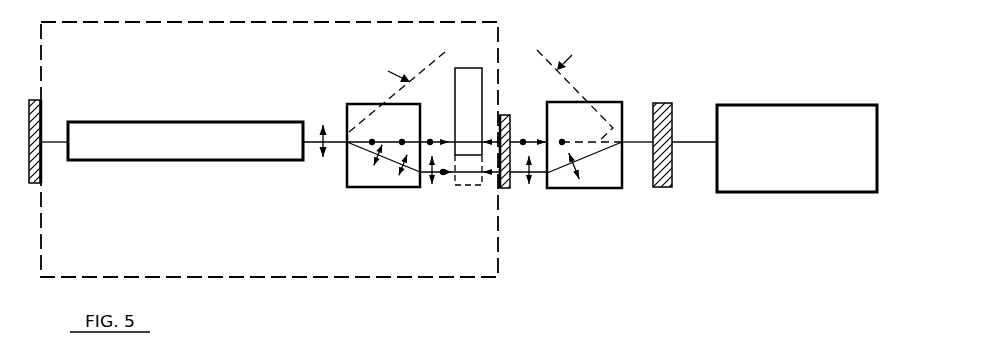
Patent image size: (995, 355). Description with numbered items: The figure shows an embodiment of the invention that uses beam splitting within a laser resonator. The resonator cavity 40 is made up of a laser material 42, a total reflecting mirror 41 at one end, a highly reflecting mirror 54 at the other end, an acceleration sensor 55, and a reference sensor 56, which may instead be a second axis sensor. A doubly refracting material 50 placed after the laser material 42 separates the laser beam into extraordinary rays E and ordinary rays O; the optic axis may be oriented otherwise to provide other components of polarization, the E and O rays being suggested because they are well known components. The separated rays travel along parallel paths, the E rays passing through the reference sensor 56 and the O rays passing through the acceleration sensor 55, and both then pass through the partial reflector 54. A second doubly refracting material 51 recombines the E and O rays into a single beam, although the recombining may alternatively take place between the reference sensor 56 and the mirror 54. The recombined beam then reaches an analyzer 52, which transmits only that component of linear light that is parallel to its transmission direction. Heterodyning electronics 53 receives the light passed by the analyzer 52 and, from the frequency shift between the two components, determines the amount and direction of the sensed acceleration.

The resonator cavity 40 is at (240, 62).
The total reflecting mirror 41 is at (41, 162).
The laser material 42 is at (250, 145).
The doubly refracting material 50 is at (362, 165).
The doubly refracting material 51 is at (605, 180).
The analyzer 52 is at (658, 187).
The heterodyning electronics 53 is at (788, 173).
The highly reflecting mirror 54 is at (510, 185).
The acceleration sensor 55 is at (463, 93).
The reference sensor 56 is at (472, 187).